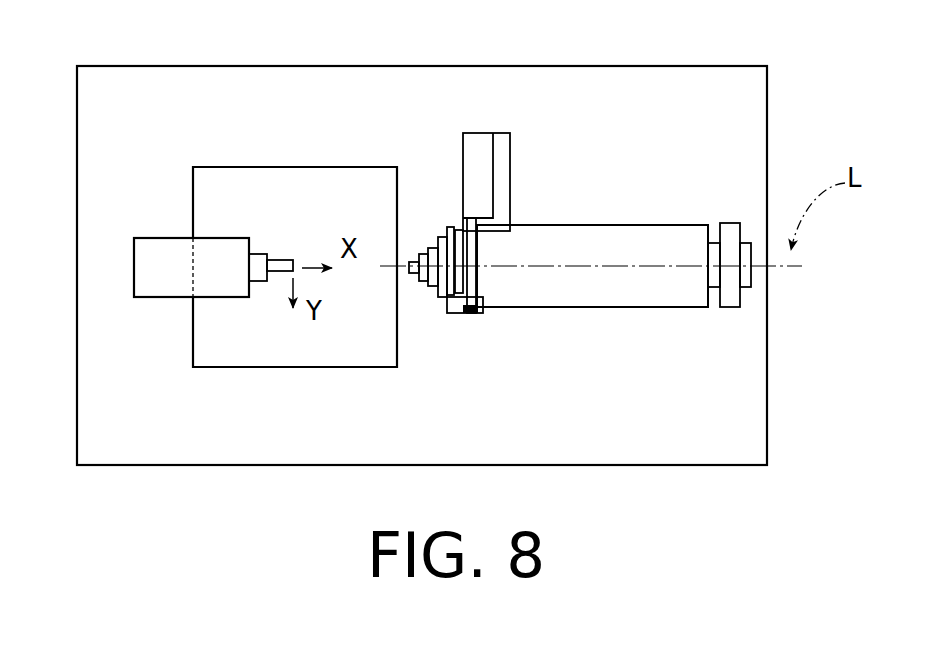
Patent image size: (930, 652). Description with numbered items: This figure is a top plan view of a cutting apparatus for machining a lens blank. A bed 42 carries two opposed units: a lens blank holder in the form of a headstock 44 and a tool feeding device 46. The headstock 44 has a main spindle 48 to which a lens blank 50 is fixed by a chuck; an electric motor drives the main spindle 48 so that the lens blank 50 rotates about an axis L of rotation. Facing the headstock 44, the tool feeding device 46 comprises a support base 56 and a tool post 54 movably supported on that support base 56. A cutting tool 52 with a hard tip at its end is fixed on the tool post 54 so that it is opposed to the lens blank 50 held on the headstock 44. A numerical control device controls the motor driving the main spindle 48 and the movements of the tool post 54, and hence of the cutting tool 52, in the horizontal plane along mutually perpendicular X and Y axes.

The bed 42 is at (720, 77).
The headstock 44 is at (606, 216).
The tool feeding device 46 is at (168, 208).
The main spindle 48 is at (432, 256).
The lens blank 50 is at (412, 272).
The cutting tool 52 is at (277, 260).
The tool post 54 is at (167, 281).
The support base 56 is at (228, 182).